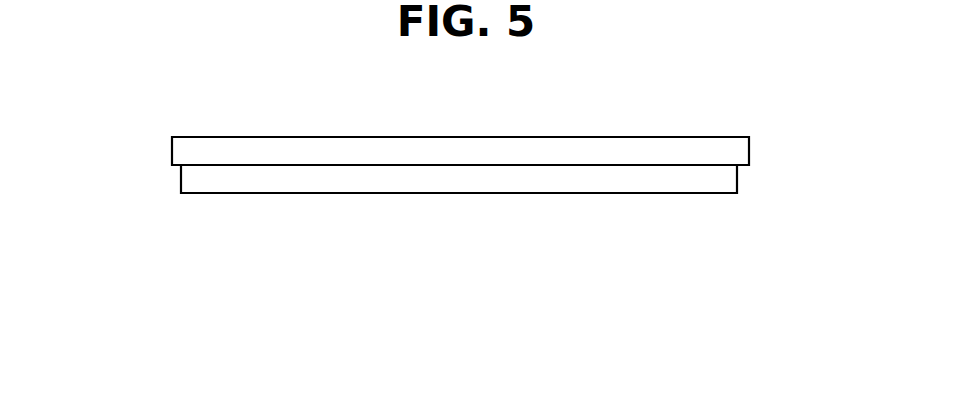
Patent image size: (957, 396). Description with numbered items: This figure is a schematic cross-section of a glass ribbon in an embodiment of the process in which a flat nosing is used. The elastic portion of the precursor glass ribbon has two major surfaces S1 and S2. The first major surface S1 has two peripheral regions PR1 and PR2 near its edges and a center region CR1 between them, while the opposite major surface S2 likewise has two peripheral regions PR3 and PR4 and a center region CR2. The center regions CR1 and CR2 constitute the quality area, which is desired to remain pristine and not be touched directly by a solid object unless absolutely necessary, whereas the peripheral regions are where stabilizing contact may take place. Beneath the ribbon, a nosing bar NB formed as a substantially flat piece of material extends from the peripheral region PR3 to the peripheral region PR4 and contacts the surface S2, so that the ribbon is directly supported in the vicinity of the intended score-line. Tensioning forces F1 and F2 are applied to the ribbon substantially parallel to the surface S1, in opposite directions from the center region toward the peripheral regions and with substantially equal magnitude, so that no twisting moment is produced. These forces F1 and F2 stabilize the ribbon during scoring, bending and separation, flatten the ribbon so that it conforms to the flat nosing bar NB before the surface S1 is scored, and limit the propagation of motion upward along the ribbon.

The peripheral region PR1 is at (201, 137).
The center region CR1 is at (457, 137).
The peripheral region PR2 is at (723, 137).
The peripheral region PR3 is at (201, 167).
The center region CR2 is at (457, 167).
The peripheral region PR4 is at (723, 167).
The tensioning force F1 is at (193, 152).
The tensioning force F2 is at (727, 152).
The major surface S1 is at (170, 137).
The major surface S2 is at (751, 167).
The nosing bar NB is at (607, 183).